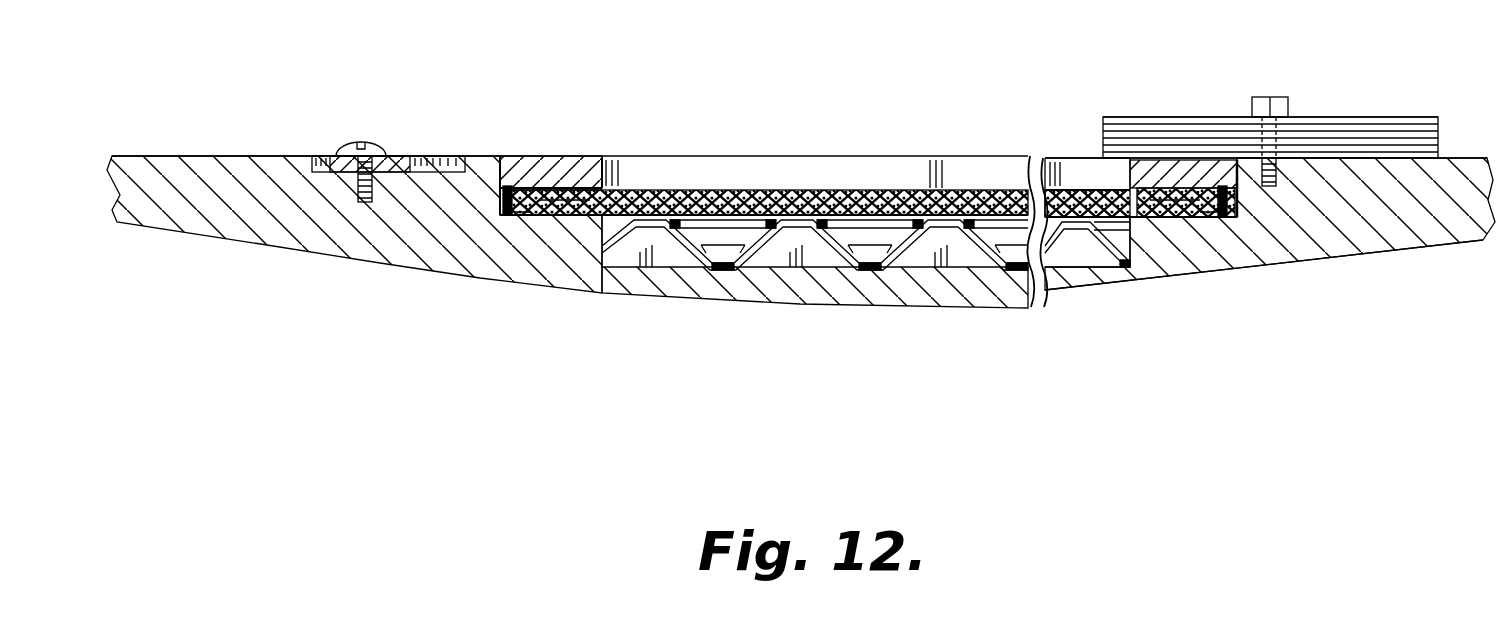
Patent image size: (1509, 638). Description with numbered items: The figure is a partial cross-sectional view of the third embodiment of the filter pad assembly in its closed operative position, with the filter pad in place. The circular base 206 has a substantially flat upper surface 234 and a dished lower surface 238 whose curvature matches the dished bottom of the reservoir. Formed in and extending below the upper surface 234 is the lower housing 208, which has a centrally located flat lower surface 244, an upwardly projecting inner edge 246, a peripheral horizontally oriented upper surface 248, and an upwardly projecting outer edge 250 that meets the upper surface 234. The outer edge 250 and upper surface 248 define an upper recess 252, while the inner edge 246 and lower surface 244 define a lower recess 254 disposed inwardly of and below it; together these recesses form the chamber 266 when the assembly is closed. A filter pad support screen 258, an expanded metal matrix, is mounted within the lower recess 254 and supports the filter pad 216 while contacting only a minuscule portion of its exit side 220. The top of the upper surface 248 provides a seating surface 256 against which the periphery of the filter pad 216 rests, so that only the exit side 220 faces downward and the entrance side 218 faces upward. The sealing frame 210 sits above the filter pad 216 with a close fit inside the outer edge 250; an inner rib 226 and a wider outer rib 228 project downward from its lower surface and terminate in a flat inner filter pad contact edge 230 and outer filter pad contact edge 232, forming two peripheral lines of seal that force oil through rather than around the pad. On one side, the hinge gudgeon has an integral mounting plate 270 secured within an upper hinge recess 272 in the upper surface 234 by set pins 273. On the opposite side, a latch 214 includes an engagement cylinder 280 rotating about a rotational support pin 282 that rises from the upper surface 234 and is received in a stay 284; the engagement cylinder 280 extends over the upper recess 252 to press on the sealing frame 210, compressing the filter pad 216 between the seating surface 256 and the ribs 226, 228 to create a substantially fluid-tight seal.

The circular base 206 is at (208, 150).
The lower housing 208 is at (924, 271).
The sealing frame 210 is at (547, 154).
The latch 214 is at (1312, 116).
The filter pad 216 is at (870, 190).
The entrance side 218 is at (682, 215).
The exit side 220 is at (627, 268).
The inner rib 226 is at (612, 188).
The outer rib 228 is at (518, 155).
The inner filter pad contact edge 230 is at (598, 258).
The outer filter pad contact edge 232 is at (520, 216).
The upper surface 234 is at (255, 155).
The lower surface 238 is at (262, 262).
The lower surface 244 is at (733, 243).
The inner edge 246 is at (604, 270).
The upper surface 248 is at (540, 212).
The outer edge 250 is at (500, 200).
The upper recess 252 is at (505, 212).
The lower recess 254 is at (668, 258).
The seating surface 256 is at (545, 222).
The filter pad support screen 258 is at (757, 255).
The chamber 266 is at (782, 189).
The mounting plate 270 is at (332, 155).
The upper hinge recess 272 is at (440, 155).
The set pin 273 is at (358, 148).
The engagement cylinder 280 is at (1370, 118).
The rotational support pin 282 is at (1260, 142).
The stay 284 is at (1262, 97).